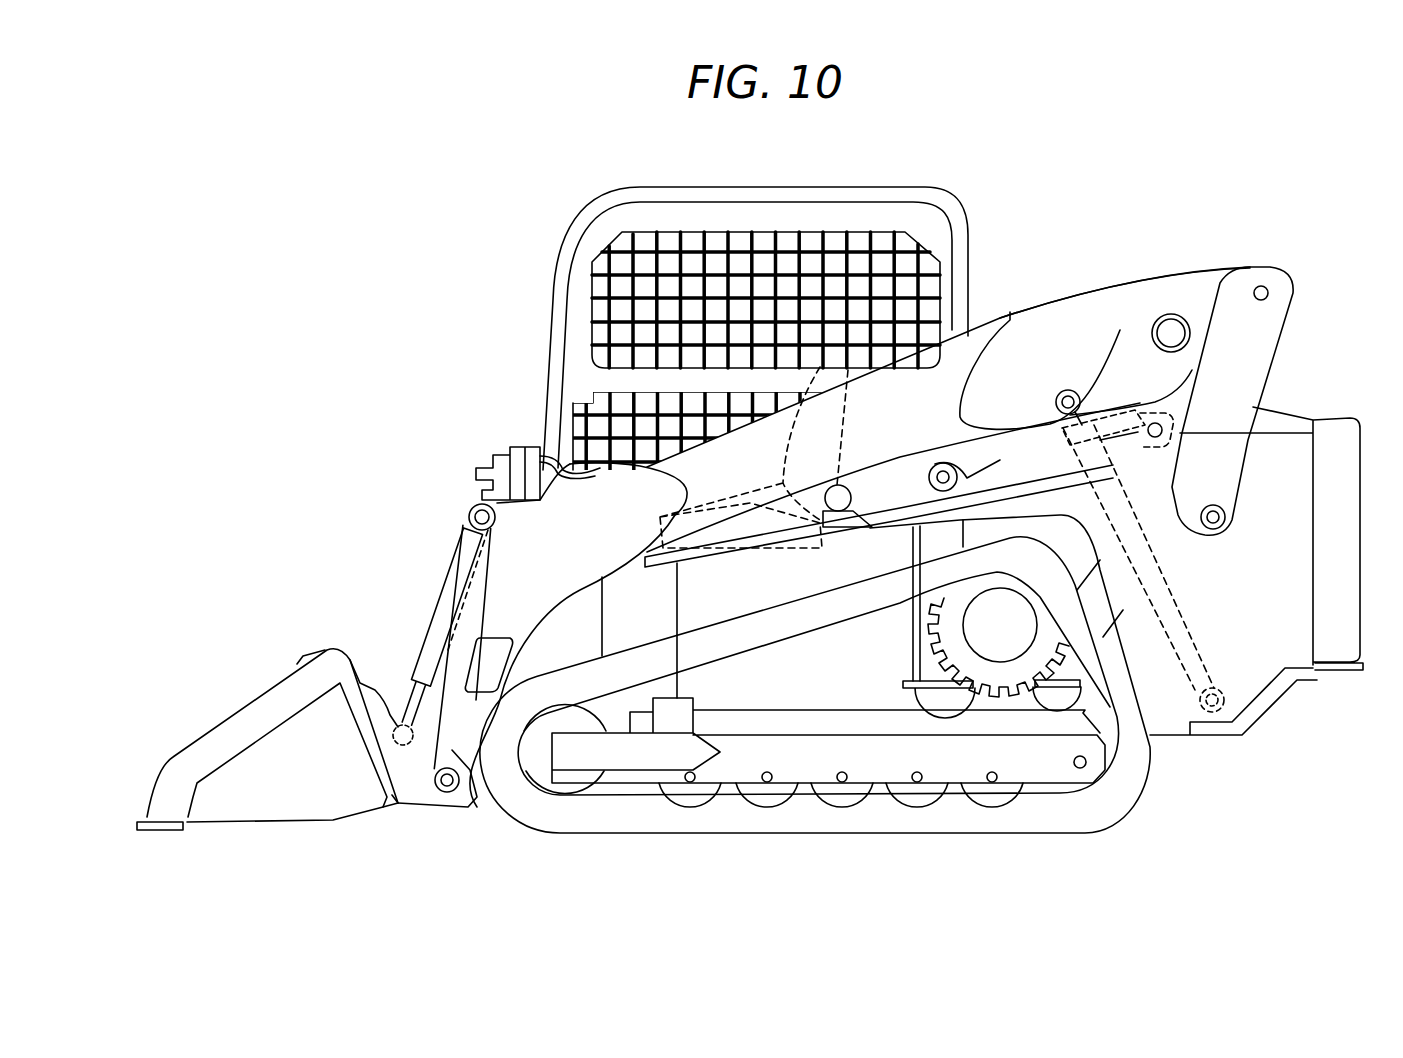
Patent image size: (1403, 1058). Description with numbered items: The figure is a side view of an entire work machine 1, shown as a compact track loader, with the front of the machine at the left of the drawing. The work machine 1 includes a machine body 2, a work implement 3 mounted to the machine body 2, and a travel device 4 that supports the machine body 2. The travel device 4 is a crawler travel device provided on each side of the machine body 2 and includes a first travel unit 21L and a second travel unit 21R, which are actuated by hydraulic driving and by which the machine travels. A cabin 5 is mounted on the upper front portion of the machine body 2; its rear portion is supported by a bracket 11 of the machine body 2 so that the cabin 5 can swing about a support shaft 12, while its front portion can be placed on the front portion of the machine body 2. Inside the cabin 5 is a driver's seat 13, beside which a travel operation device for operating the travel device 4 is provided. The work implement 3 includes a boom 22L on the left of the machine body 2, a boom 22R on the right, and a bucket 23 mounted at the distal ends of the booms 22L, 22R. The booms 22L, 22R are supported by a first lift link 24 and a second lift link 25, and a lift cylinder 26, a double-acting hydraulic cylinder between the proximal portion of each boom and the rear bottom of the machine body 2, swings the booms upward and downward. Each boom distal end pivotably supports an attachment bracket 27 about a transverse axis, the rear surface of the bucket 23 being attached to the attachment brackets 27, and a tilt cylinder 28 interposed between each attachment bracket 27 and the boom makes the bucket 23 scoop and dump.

The work machine 1 is at (428, 295).
The machine body 2 is at (505, 660).
The work implement 3 is at (463, 478).
The travel device 4 is at (1170, 790).
The cabin 5 is at (968, 185).
The bracket 11 is at (962, 482).
The support shaft 12 is at (943, 465).
The driver's seat 13 is at (828, 333).
The first travel unit 21L is at (998, 734).
The second travel unit 21R is at (1012, 647).
The boom 22L is at (1145, 252).
The boom 22R is at (1218, 258).
The bucket 23 is at (257, 762).
The first lift link 24 is at (1263, 340).
The second lift link 25 is at (1108, 427).
The lift cylinder 26 is at (1197, 627).
The attachment bracket 27 is at (423, 790).
The tilt cylinder 28 is at (446, 592).